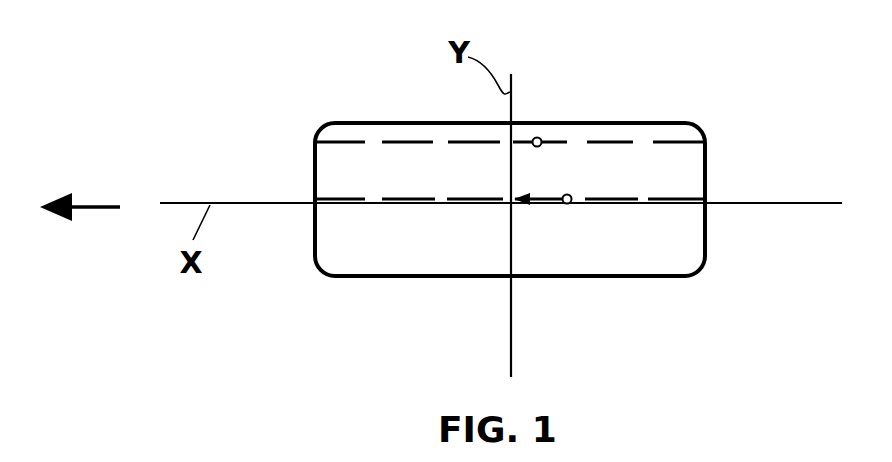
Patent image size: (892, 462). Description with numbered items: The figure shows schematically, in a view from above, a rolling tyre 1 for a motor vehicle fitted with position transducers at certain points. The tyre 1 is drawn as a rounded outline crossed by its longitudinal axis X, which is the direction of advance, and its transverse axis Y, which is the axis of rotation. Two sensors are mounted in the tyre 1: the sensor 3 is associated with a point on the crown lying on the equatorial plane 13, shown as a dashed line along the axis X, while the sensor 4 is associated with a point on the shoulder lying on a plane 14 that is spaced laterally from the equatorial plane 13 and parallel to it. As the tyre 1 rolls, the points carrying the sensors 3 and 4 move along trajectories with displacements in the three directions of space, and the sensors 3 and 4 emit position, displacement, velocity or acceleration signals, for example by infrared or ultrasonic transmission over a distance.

The tyre 1 is at (386, 285).
The sensor 3 is at (568, 204).
The sensor 4 is at (540, 138).
The equatorial plane 13 is at (610, 200).
The plane 14 is at (615, 141).